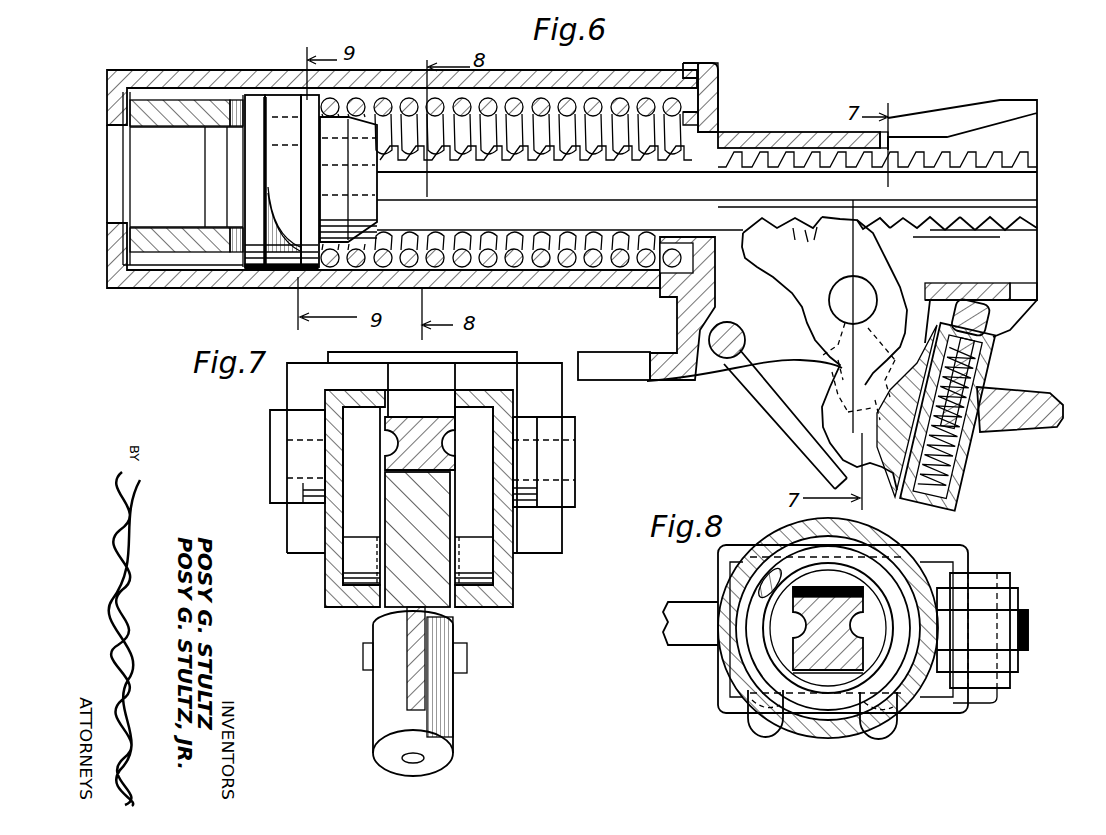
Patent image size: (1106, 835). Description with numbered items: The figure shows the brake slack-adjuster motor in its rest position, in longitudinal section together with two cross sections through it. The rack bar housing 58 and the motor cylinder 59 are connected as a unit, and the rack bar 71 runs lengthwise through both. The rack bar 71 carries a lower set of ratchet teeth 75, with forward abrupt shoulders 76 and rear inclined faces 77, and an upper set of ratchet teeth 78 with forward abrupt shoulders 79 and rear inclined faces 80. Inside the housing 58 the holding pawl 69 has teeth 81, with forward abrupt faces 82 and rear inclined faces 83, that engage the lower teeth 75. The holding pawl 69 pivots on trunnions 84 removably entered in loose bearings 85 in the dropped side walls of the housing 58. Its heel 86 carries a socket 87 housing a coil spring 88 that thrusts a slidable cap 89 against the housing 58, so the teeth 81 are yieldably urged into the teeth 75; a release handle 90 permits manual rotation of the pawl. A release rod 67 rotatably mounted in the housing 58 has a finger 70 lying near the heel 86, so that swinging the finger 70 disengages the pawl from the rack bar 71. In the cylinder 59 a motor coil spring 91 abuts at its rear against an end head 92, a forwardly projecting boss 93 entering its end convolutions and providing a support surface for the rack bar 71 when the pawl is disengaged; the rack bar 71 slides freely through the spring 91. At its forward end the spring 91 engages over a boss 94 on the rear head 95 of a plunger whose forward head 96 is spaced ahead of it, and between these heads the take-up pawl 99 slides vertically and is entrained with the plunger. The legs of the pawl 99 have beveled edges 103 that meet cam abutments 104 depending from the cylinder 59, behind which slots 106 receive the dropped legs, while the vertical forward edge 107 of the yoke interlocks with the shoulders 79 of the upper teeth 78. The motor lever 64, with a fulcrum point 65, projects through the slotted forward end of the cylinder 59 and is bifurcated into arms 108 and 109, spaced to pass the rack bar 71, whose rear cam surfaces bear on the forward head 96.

In FIG. 6, the rack bar housing 58 is at (763, 133).
In FIG. 7, the rack bar housing 58 is at (503, 525).
In FIG. 6, the motor cylinder 59 is at (547, 83).
In FIG. 8, the motor cylinder 59 is at (783, 533).
In FIG. 8, the motor lever 64 is at (667, 635).
In FIG. 8, the fulcrum point 65 is at (992, 688).
In FIG. 6, the release rod 67 is at (716, 358).
In FIG. 6, the holding pawl 69 is at (793, 287).
In FIG. 7, the holding pawl 69 is at (393, 583).
In FIG. 6, the finger 70 is at (781, 428).
In FIG. 6, the rack bar 71 is at (707, 201).
In FIG. 7, the rack bar 71 is at (437, 443).
In FIG. 8, the rack bar 71 is at (828, 630).
In FIG. 6, the lower set of ratchet teeth 75 is at (957, 223).
In FIG. 6, the forward abrupt shoulders 76 is at (962, 226).
In FIG. 6, the rear inclined faces 77 is at (925, 232).
In FIG. 6, the upper set of ratchet teeth 78 is at (772, 158).
In FIG. 6, the forward abrupt shoulders 79 is at (510, 155).
In FIG. 6, the rear inclined faces 80 is at (603, 153).
In FIG. 6, the teeth 81 is at (817, 232).
In FIG. 6, the forward abrupt faces 82 is at (782, 213).
In FIG. 6, the rear inclined faces 83 is at (790, 204).
In FIG. 6, the trunnions 84 is at (848, 279).
In FIG. 7, the trunnions 84 is at (353, 557).
In FIG. 6, the loose bearings 85 is at (744, 376).
In FIG. 7, the loose bearings 85 is at (340, 597).
In FIG. 6, the heel 86 is at (822, 437).
In FIG. 7, the heel 86 is at (417, 673).
In FIG. 6, the socket 87 is at (957, 487).
In FIG. 7, the socket 87 is at (452, 762).
In FIG. 6, the coil spring 88 is at (963, 457).
In FIG. 6, the slidable cap 89 is at (985, 322).
In FIG. 6, the release handle 90 is at (1040, 400).
In FIG. 7, the release handle 90 is at (363, 670).
In FIG. 6, the motor coil spring 91 is at (620, 266).
In FIG. 8, the motor coil spring 91 is at (760, 653).
In FIG. 6, the end head 92 is at (716, 114).
In FIG. 6, the boss 93 is at (667, 265).
In FIG. 6, the boss 94 is at (347, 122).
In FIG. 6, the rear head 95 is at (320, 100).
In FIG. 6, the forward head 96 is at (252, 96).
In FIG. 6, the take-up pawl 99 is at (283, 93).
In FIG. 6, the beveled forward lower edges 103 is at (183, 207).
In FIG. 8, the cam abutments 104 is at (877, 733).
In FIG. 6, the slots 106 is at (310, 281).
In FIG. 6, the forward edge of the yoke 107 is at (237, 147).
In FIG. 6, the arm 108 is at (157, 117).
In FIG. 6, the arm 109 is at (180, 237).